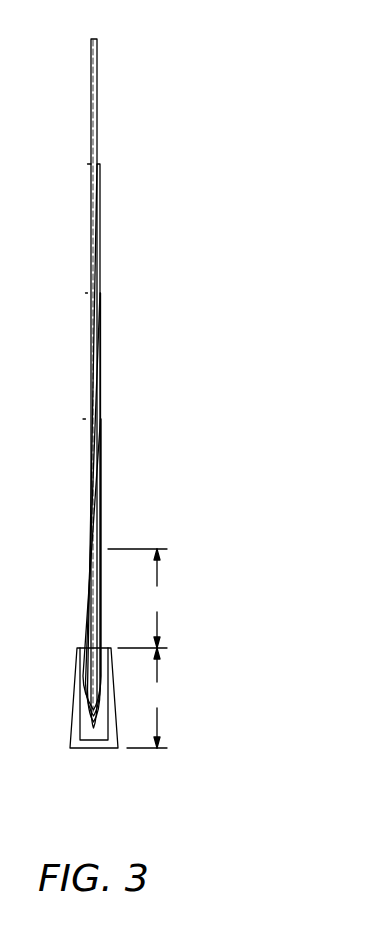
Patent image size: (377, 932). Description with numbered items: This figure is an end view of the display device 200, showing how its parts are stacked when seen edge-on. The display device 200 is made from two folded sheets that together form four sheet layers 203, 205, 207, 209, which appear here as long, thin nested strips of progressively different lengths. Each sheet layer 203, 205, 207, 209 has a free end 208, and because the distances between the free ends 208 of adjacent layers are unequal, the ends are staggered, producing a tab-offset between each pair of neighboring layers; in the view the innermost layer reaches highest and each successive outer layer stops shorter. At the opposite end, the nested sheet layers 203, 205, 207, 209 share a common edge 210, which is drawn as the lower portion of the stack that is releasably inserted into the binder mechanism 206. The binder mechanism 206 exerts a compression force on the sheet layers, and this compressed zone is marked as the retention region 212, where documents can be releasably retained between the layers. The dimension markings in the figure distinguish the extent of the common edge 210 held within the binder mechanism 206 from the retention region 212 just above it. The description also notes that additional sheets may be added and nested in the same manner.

The display device 200 is at (130, 60).
The sheet layer 203 is at (83, 468).
The sheet layer 205 is at (86, 328).
The binder mechanism 206 is at (95, 748).
The sheet layer 207 is at (88, 207).
The free end 208 is at (5, 109).
The sheet layer 209 is at (97, 113).
The common edge 210 is at (148, 698).
The retention region 212 is at (142, 598).